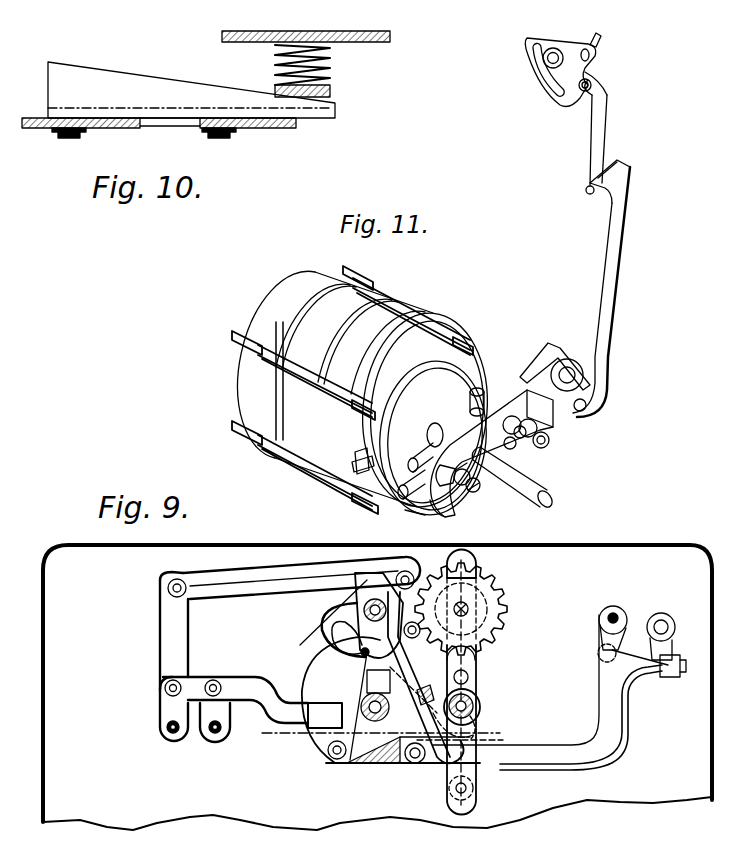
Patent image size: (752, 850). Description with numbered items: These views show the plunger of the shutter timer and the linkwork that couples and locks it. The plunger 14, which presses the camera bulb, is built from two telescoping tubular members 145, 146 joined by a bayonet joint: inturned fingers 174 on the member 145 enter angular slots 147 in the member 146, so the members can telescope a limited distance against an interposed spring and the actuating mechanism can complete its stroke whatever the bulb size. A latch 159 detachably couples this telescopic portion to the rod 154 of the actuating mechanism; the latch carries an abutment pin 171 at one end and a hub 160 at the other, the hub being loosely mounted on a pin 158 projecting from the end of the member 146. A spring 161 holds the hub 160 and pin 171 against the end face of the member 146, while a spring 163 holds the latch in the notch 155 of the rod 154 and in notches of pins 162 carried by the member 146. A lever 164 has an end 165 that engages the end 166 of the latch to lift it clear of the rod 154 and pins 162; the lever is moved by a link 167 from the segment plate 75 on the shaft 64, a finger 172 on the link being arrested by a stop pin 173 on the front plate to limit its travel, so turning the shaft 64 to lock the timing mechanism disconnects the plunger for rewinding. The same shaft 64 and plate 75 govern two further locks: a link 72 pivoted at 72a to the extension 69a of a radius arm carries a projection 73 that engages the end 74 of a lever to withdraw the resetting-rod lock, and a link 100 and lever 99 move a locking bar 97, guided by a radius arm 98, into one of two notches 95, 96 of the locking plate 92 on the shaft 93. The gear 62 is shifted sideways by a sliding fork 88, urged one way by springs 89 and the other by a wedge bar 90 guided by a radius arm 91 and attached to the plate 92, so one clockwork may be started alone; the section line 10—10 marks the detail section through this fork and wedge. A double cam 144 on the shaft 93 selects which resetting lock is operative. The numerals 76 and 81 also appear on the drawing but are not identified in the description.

In FIG. 11, the plunger 14 is at (252, 373).
In FIG. 11, the telescoping tubular member 145 is at (335, 389).
In FIG. 11, the telescoping tubular member 146 is at (425, 413).
In FIG. 11, the angular slots 147 is at (354, 468).
In FIG. 11, the rod 154 is at (532, 507).
In FIG. 11, the notch 155 is at (458, 464).
In FIG. 11, the pin 158 is at (548, 444).
In FIG. 11, the latch 159 is at (442, 510).
In FIG. 11, the hub 160 is at (492, 397).
In FIG. 11, the spring 161 is at (475, 413).
In FIG. 11, the pins 162 is at (428, 444).
In FIG. 11, the spring 163 is at (478, 490).
In FIG. 11, the lever 164 is at (572, 360).
In FIG. 11, the end of lever 165 is at (530, 355).
In FIG. 11, the end of latch 166 is at (577, 412).
In FIG. 11, the link 167 is at (634, 282).
In FIG. 9, the link 167 is at (497, 630).
In FIG. 11, the abutment pin 171 is at (418, 509).
In FIG. 11, the finger 172 is at (604, 197).
In FIG. 11, the stop pin 173 is at (586, 190).
In FIG. 11, the inturned fingers 174 is at (359, 455).
In FIG. 11, the segment plate 75 is at (552, 103).
In FIG. 11, the shaft 64 is at (589, 33).
In FIG. 9, the shaft 64 is at (366, 605).
In FIG. 10, the laterally sliding fork 88 is at (332, 90).
In FIG. 9, the laterally sliding fork 88 is at (478, 780).
In FIG. 10, the springs 89 is at (322, 46).
In FIG. 9, the springs 89 is at (481, 716).
In FIG. 10, the wedge bar 90 is at (134, 76).
In FIG. 9, the wedge bar 90 is at (383, 755).
In FIG. 10, the radius arm 91 is at (276, 128).
In FIG. 9, the radius arm 91 is at (485, 702).
In FIG. 10, the locking plate 92 is at (38, 129).
In FIG. 9, the locking plate 92 is at (318, 656).
In FIG. 9, the shaft 93 is at (404, 688).
In FIG. 9, the notch 95 is at (337, 694).
In FIG. 9, the notch 96 is at (377, 668).
In FIG. 9, the locking bar 97 is at (268, 698).
In FIG. 9, the radius arm 98 is at (220, 745).
In FIG. 9, the lever 99 is at (162, 641).
In FIG. 9, the link 100 is at (268, 583).
In FIG. 9, the bar 81 is at (358, 578).
In FIG. 9, the pivot 76 is at (410, 576).
In FIG. 9, the gear 62 is at (480, 597).
In FIG. 9, the section line 10 is at (377, 687).
In FIG. 9, the double cam 144 is at (429, 695).
In FIG. 9, the link 72 is at (617, 710).
In FIG. 9, the pivot 72a is at (598, 657).
In FIG. 9, the projection 73 is at (676, 678).
In FIG. 9, the end of lever 74 is at (672, 657).
In FIG. 9, the extension 69a is at (600, 610).